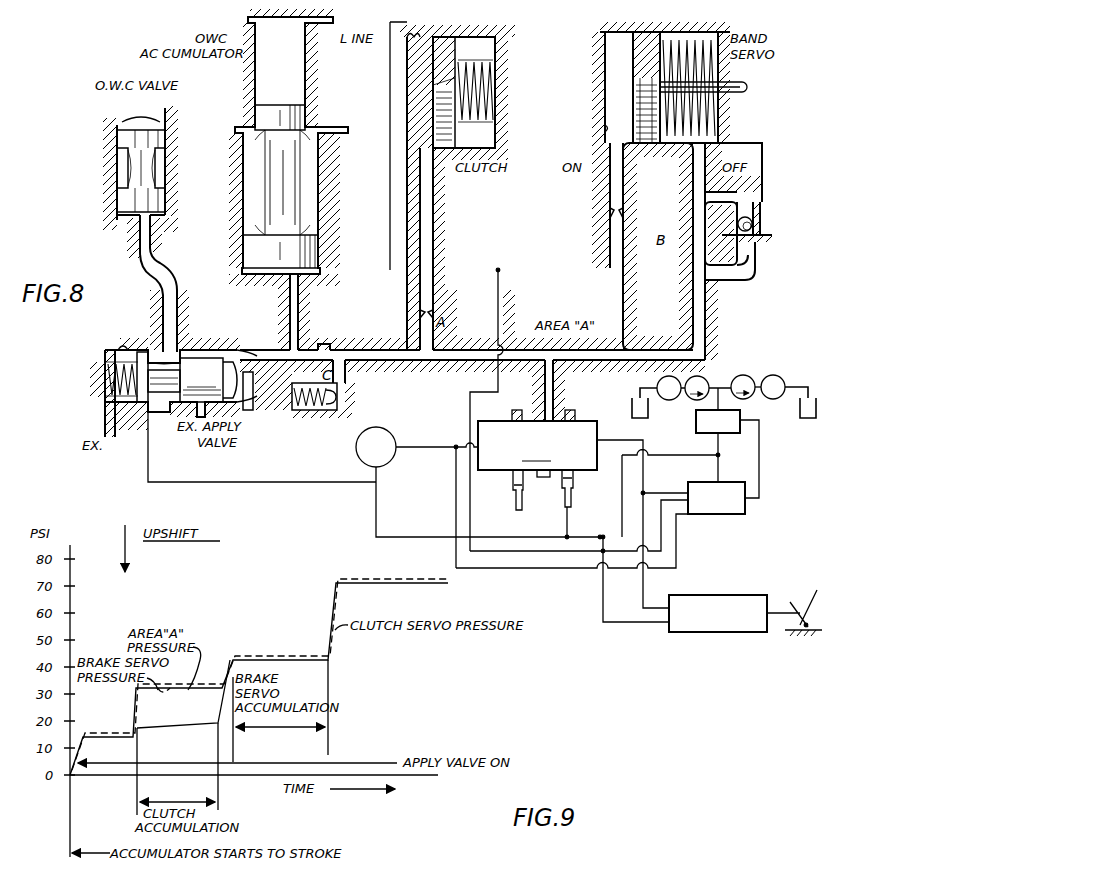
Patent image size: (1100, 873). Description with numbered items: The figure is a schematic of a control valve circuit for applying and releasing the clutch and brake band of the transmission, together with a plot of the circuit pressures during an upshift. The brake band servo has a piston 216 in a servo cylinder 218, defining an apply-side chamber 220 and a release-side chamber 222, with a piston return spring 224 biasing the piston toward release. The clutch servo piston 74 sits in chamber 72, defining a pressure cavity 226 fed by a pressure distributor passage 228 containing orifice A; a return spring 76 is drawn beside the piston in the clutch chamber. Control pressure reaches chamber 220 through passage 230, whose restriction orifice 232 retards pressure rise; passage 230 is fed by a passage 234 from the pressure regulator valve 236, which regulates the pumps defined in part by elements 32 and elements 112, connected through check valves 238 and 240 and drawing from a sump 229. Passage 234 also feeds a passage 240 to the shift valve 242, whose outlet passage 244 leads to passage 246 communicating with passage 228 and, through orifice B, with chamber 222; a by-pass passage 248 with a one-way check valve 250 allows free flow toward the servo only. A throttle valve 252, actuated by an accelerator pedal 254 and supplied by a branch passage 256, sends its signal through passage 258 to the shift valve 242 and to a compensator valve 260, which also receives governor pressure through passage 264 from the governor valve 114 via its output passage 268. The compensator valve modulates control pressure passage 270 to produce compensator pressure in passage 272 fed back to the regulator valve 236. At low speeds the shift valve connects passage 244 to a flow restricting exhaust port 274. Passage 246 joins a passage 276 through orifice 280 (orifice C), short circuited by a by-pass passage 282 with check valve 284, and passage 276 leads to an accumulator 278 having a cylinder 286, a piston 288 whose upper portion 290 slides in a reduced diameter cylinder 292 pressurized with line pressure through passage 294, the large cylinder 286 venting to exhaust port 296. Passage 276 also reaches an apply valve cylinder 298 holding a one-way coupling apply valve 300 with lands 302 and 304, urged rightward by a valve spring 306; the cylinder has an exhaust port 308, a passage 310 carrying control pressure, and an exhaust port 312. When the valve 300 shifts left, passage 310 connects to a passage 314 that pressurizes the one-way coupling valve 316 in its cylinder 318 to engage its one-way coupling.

The positive displacement pump elements 32 is at (657, 385).
The chamber 72 is at (417, 36).
The piston 74 is at (447, 50).
The clutch return spring 76 is at (465, 122).
The pump elements 112 is at (803, 366).
The governor valve 114 is at (388, 429).
The piston 216 is at (645, 56).
The servo cylinder 218 is at (604, 47).
The pressure chamber 220 is at (604, 129).
The pressure chamber 222 is at (722, 140).
The piston return spring 224 is at (726, 96).
The pressure cavity 226 is at (405, 84).
The pressure distributor passage 228 is at (428, 214).
The sump 229 is at (813, 422).
The pressure distributor passage 230 is at (612, 190).
The restriction orifice 232 is at (616, 213).
The passage 234 is at (621, 483).
The pressure regulator valve 236 is at (700, 433).
The check valve 238 is at (706, 377).
The check valve / passage 240 is at (563, 487).
The shift valve 242 is at (478, 472).
The passage 244 is at (553, 383).
The passage 246 is at (652, 352).
The by-pass passage 248 is at (748, 253).
The one-way check valve 250 is at (760, 222).
The throttle valve 252 is at (669, 632).
The vehicle accelerator pedal 254 is at (810, 590).
The branch passage 256 is at (622, 625).
The passage 258 is at (645, 580).
The compensator valve 260 is at (733, 514).
The passage 264 is at (524, 571).
The output pressure passage 268 is at (440, 447).
The control pressure passage 270 is at (735, 457).
The passage 272 is at (762, 482).
The exhaust port 274 is at (512, 486).
The passage 276 is at (306, 292).
The accumulator 278 is at (322, 196).
The flow restricting orifice 280 is at (330, 348).
The one-way by-pass passage 282 is at (334, 406).
The one-way check valve 284 is at (314, 412).
The accumulator cylinder 286 is at (246, 162).
The piston 288 is at (250, 262).
The upper portion of the piston 290 is at (262, 118).
The reduced diameter cylinder 292 is at (258, 88).
The passage 294 is at (390, 258).
The exhaust port 296 is at (352, 123).
The apply valve cylinder 298 is at (160, 365).
The one-way coupling apply valve 300 is at (169, 362).
The land 302 is at (238, 355).
The land 304 is at (117, 342).
The valve spring 306 is at (100, 362).
The exhaust port 308 is at (178, 412).
The passage 310 is at (150, 448).
The exhaust port 312 is at (102, 407).
The passage 314 is at (151, 232).
The one-way coupling valve 316 is at (124, 156).
The cylinder 318 is at (118, 193).